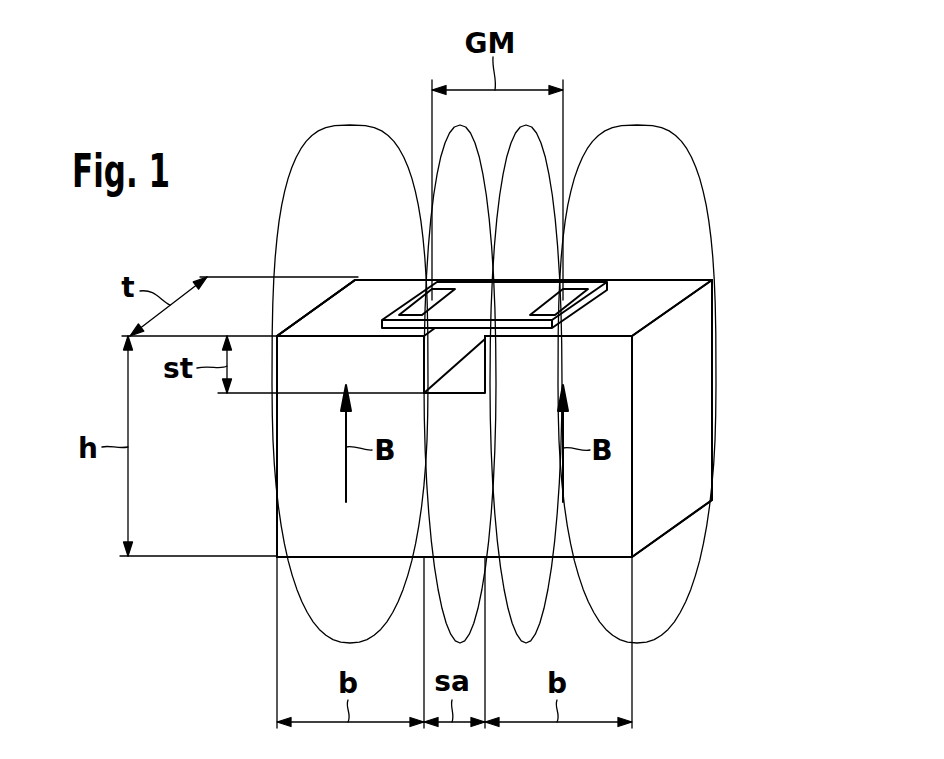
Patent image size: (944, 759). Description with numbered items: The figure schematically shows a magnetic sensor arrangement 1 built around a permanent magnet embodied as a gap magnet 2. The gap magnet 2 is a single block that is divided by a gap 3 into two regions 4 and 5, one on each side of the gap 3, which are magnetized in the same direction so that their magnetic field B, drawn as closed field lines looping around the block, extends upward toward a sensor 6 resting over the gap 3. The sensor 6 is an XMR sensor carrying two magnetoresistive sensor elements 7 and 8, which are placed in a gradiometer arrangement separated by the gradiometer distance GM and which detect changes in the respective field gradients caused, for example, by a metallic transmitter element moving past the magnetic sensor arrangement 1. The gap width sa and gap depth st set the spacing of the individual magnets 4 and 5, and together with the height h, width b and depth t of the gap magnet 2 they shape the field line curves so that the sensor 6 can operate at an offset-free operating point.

The magnetic sensor arrangement 1 is at (731, 526).
The gap magnet 2 is at (682, 405).
The gap 3 is at (442, 358).
The region 4 is at (640, 305).
The region 5 is at (373, 293).
The sensor 6 is at (518, 293).
The magnetoresistive sensor element 7 is at (440, 292).
The magnetoresistive sensor element 8 is at (572, 288).